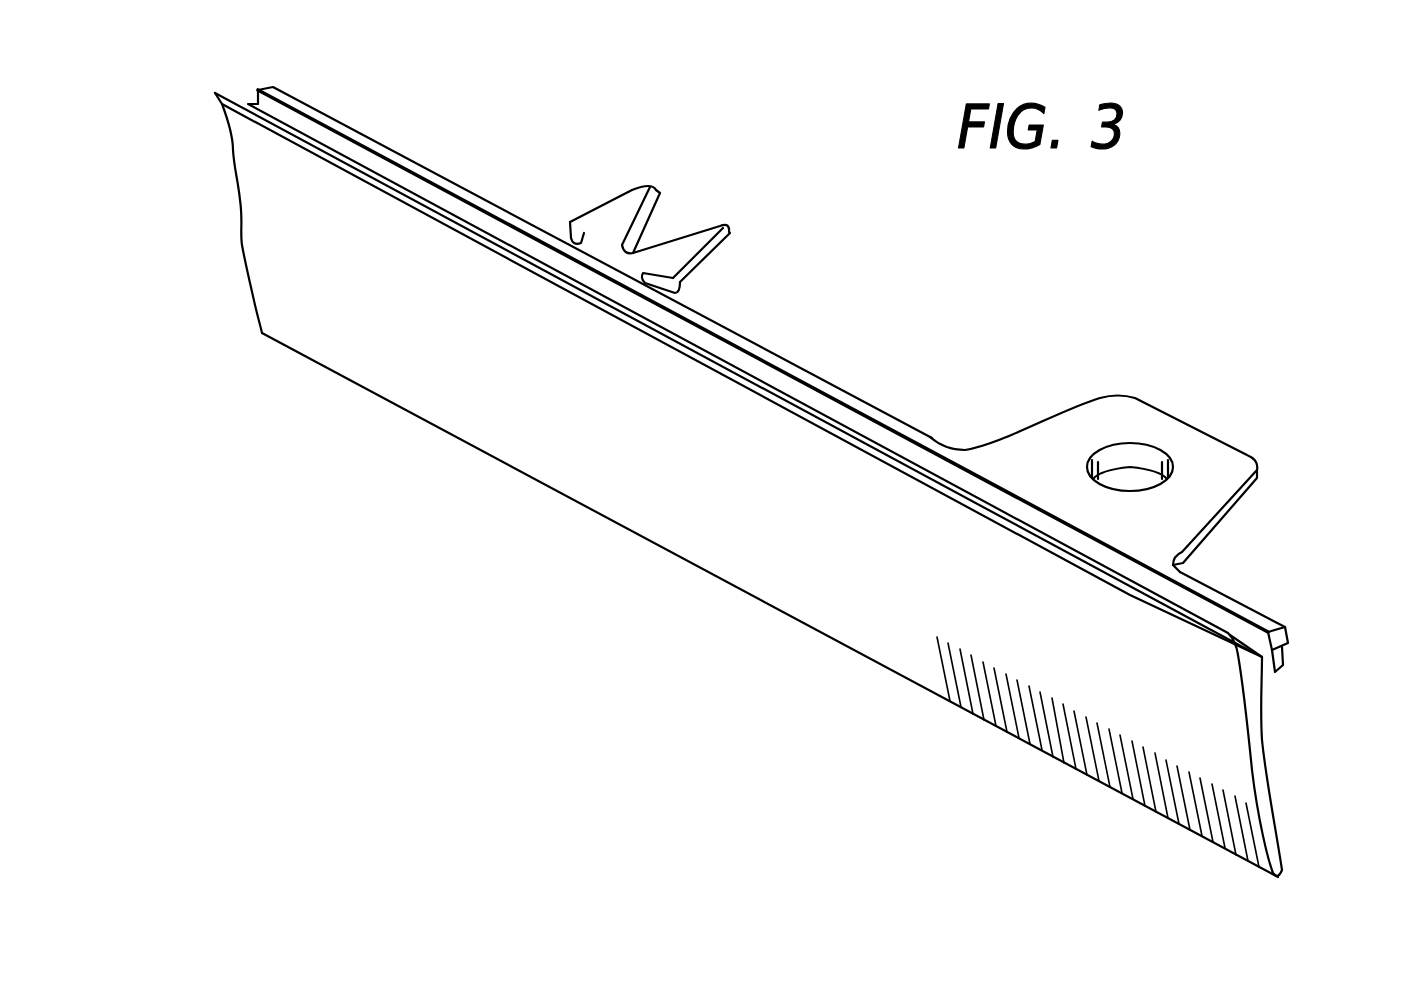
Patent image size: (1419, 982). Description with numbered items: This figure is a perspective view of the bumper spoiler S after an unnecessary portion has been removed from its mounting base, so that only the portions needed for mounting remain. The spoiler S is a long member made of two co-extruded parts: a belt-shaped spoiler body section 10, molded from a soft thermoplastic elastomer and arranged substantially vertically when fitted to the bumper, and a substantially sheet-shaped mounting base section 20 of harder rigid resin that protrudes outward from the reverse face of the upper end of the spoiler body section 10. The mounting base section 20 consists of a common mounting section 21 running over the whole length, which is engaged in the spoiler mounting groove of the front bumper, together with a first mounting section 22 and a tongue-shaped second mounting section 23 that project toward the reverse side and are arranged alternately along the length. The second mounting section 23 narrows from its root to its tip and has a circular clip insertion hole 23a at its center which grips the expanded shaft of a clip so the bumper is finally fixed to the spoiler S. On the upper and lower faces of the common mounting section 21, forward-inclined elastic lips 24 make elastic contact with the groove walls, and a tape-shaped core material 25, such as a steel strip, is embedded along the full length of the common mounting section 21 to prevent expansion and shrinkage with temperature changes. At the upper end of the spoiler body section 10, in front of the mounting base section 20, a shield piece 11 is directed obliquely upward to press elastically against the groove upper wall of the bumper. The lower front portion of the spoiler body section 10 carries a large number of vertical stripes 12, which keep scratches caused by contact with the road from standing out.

The spoiler body section 10 is at (528, 462).
The shield piece 11 is at (797, 412).
The stripes 12 is at (1074, 745).
The mounting base section 20 is at (840, 382).
The common mounting section 21 is at (755, 345).
The first mounting section 22 is at (602, 217).
The second mounting section 23 is at (1218, 452).
The clip insertion hole 23a is at (1142, 457).
The elastic lips 24 is at (1218, 594).
The core material 25 is at (1293, 656).
The spoiler S is at (932, 382).